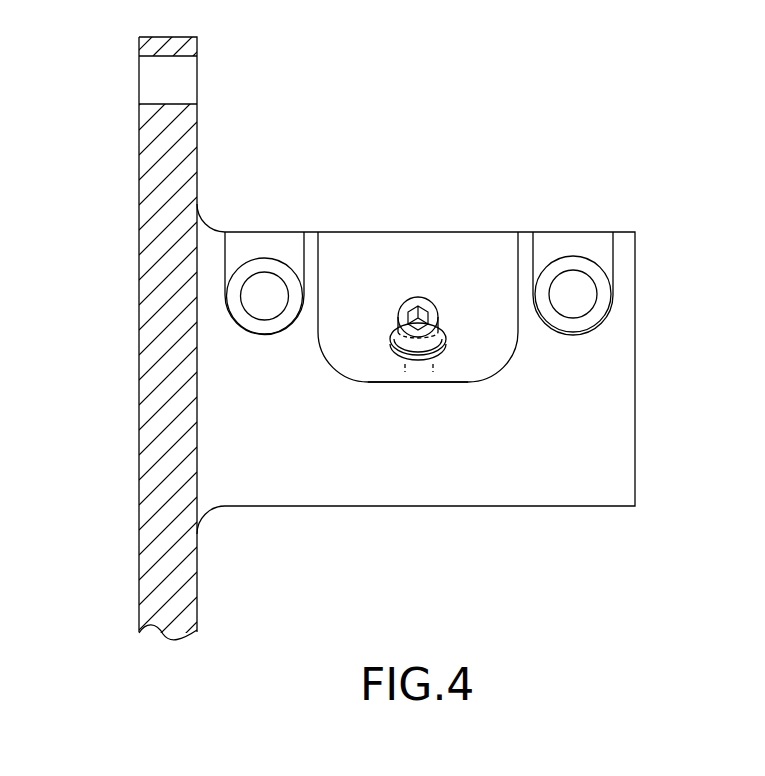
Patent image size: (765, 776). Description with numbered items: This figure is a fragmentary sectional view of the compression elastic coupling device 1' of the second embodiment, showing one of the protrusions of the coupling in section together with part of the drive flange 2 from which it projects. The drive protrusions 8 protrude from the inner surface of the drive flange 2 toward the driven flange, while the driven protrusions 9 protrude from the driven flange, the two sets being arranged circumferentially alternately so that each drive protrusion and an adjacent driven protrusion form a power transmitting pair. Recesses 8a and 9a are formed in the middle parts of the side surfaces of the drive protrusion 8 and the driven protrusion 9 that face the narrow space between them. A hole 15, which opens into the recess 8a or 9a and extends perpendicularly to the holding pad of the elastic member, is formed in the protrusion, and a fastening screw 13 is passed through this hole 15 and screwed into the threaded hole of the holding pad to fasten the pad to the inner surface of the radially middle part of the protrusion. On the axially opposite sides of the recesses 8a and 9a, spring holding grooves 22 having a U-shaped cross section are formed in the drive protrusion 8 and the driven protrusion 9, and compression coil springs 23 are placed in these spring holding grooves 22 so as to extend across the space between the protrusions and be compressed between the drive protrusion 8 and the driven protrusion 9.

The drive flange 2 is at (136, 38).
The drive protrusion 8 is at (416, 403).
The driven protrusion 9 is at (445, 510).
The recess 8a is at (384, 506).
The recess 9a is at (377, 370).
The compression elastic coupling device 1' is at (418, 240).
The spring holding groove 22 is at (247, 243).
The compression coil spring 23 is at (279, 261).
The fastening screw 13 is at (398, 294).
The hole 15 is at (443, 310).